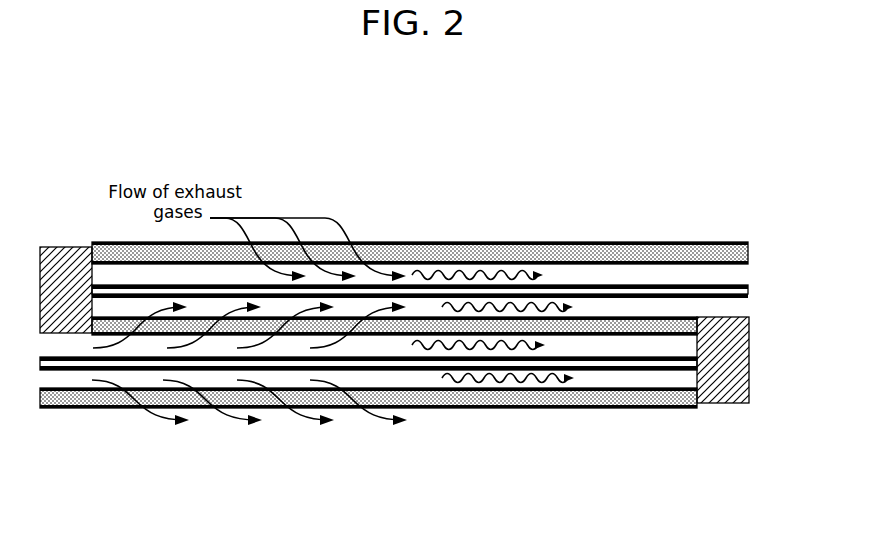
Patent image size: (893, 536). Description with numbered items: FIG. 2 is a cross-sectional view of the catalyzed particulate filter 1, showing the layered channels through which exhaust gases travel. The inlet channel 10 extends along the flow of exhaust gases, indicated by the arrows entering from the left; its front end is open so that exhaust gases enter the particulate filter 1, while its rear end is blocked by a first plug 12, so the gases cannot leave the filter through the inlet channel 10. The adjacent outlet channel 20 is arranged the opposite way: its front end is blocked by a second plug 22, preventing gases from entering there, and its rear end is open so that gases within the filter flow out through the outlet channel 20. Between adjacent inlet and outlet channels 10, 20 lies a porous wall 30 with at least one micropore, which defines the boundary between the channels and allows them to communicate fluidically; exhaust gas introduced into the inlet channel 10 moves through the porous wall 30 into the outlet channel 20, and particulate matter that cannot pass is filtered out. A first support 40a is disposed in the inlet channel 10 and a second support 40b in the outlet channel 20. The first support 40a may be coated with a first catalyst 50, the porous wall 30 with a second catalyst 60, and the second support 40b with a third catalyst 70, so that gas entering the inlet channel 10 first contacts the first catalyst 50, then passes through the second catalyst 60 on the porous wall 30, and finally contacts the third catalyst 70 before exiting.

The catalyzed particulate filter 1 is at (440, 448).
The inlet channel 10 is at (369, 405).
The first plug 12 is at (723, 390).
The outlet channel 20 is at (444, 252).
The second plug 22 is at (63, 258).
The porous wall 30 is at (394, 319).
The first support 40a is at (647, 369).
The second support 40b is at (742, 296).
The first catalyst 50 is at (677, 367).
The second catalyst 60 is at (657, 323).
The third catalyst 70 is at (678, 290).